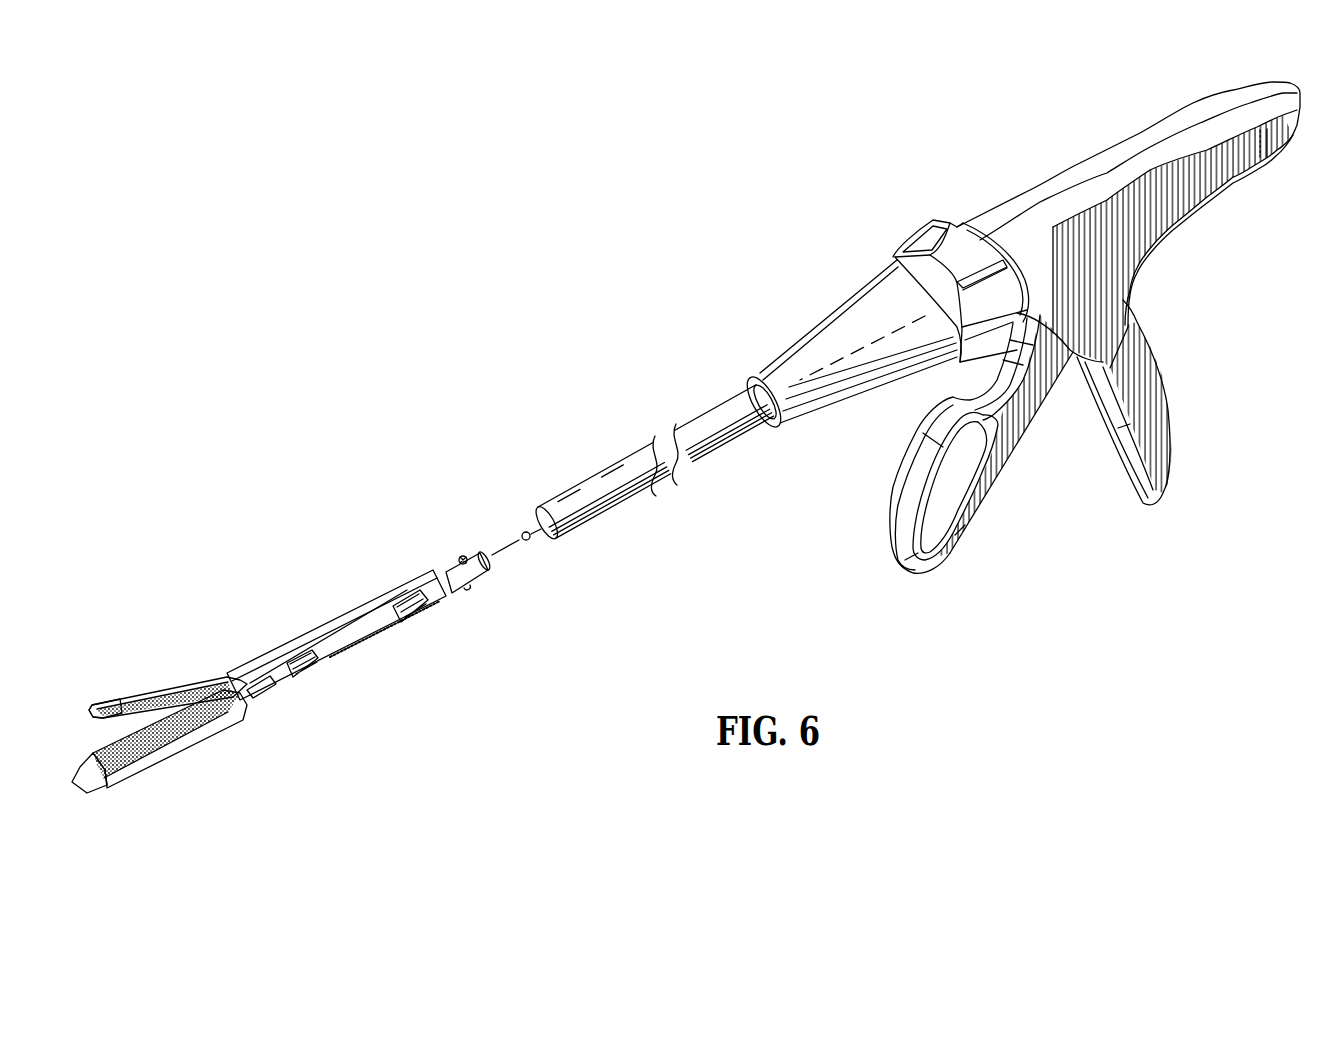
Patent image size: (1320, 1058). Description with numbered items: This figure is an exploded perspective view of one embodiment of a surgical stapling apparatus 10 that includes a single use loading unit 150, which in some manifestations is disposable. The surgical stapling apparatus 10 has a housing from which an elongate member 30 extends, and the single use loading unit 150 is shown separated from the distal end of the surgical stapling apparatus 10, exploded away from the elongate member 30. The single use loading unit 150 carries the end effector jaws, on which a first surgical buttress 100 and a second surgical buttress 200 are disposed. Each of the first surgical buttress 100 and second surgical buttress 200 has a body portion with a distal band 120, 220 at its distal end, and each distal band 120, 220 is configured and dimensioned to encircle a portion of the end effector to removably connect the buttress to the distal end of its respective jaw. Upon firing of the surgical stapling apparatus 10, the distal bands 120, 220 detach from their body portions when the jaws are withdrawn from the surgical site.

The surgical stapling apparatus 10 is at (548, 310).
The elongate member 30 is at (624, 460).
The single use loading unit 150 is at (282, 668).
The first surgical buttress 100 is at (159, 763).
The distal band 120 is at (108, 785).
The second surgical buttress 200 is at (168, 678).
The distal band 220 is at (107, 702).